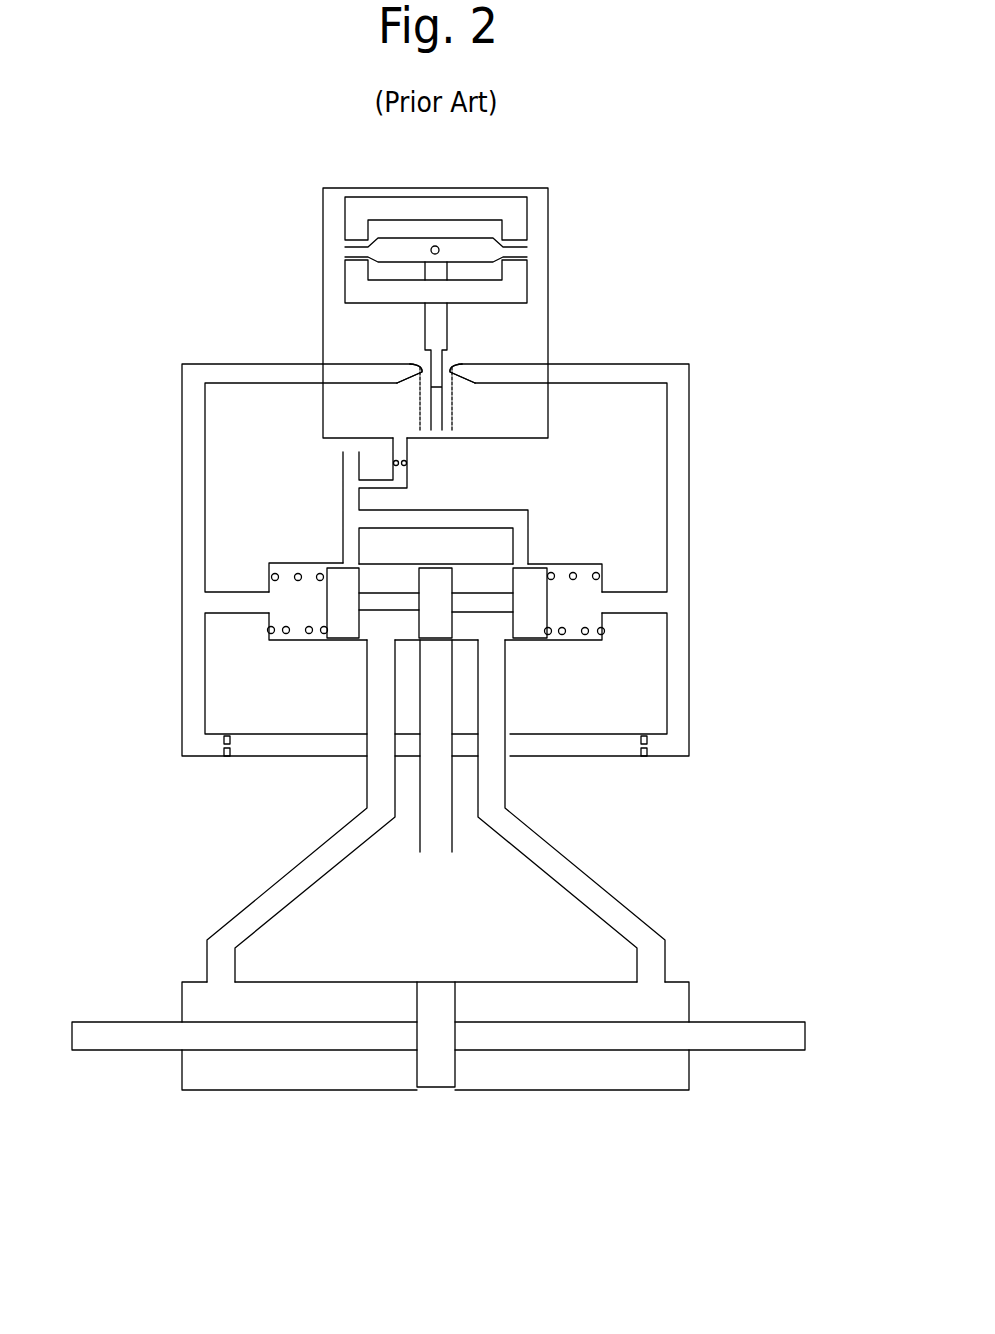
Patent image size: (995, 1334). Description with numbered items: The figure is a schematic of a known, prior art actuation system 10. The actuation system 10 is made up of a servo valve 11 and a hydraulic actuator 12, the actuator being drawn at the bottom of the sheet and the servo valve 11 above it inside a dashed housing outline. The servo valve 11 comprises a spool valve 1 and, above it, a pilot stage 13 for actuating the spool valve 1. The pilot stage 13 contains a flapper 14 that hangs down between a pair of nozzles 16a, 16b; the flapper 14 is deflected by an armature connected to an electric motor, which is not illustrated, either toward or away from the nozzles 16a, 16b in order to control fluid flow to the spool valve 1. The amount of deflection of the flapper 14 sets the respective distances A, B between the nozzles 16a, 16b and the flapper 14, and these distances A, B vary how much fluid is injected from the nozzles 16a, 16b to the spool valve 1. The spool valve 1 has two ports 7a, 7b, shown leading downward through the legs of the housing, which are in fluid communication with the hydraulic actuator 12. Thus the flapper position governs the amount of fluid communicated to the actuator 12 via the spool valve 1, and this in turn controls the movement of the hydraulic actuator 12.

The spool valve 1 is at (587, 550).
The port 7a is at (380, 640).
The port 7b is at (490, 643).
The actuation system 10 is at (148, 328).
The servo valve 11 is at (747, 378).
The hydraulic actuator 12 is at (573, 1075).
The pilot stage 13 is at (595, 185).
The flapper 14 is at (472, 343).
The nozzle 16a is at (413, 372).
The nozzle 16b is at (468, 372).
The distance A is at (453, 403).
The distance B is at (420, 422).